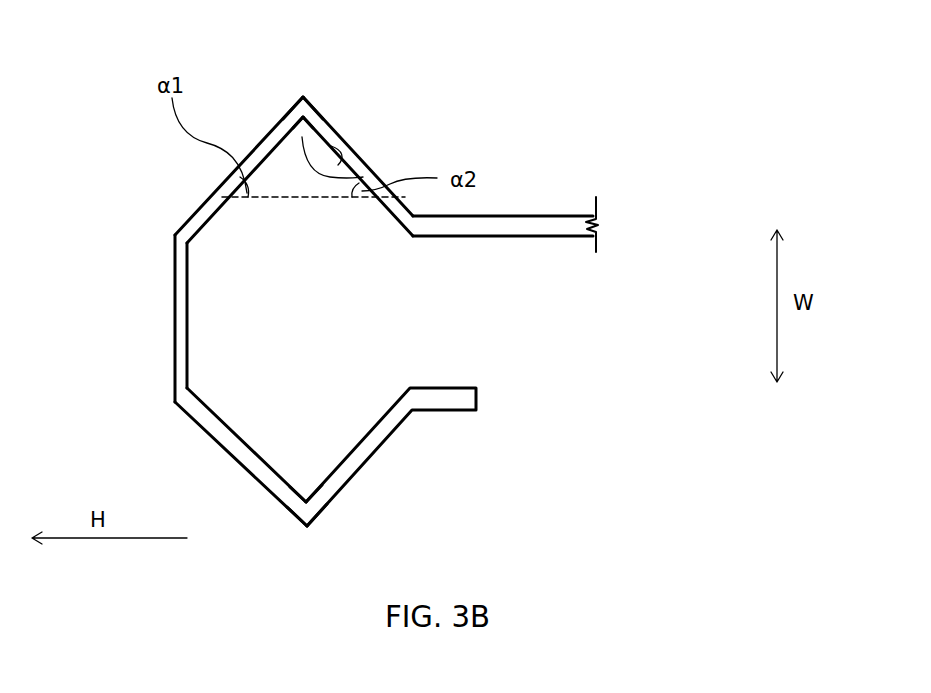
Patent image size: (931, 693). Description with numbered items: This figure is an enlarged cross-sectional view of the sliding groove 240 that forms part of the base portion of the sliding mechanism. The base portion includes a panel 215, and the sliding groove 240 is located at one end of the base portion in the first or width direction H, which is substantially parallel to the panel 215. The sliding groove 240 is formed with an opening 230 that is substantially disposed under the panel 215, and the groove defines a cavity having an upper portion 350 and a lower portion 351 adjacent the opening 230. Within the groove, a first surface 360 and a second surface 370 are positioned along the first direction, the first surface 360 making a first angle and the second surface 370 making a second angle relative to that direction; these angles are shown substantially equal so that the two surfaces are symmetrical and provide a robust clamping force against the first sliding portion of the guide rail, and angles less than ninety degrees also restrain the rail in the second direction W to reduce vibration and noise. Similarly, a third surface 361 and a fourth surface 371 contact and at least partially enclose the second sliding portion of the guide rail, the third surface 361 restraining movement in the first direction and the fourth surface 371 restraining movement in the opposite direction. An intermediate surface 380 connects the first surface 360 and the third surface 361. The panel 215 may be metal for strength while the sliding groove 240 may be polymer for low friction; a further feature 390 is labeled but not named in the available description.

The panel 215 is at (523, 228).
The opening 230 is at (450, 290).
The sliding groove 240 is at (317, 280).
The upper portion 350 is at (262, 210).
The lower portion 351 is at (298, 428).
The first surface 360 is at (262, 173).
The third surface 361 is at (259, 447).
The second surface 370 is at (363, 181).
The fourth surface 371 is at (353, 447).
The intermediate surface 380 is at (187, 311).
The bend region 390 is at (358, 183).